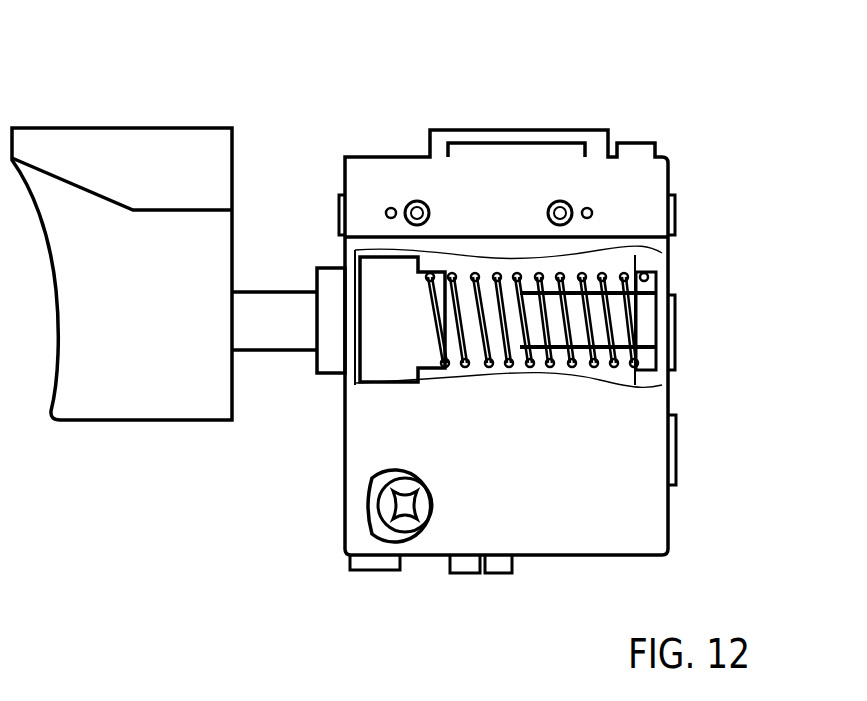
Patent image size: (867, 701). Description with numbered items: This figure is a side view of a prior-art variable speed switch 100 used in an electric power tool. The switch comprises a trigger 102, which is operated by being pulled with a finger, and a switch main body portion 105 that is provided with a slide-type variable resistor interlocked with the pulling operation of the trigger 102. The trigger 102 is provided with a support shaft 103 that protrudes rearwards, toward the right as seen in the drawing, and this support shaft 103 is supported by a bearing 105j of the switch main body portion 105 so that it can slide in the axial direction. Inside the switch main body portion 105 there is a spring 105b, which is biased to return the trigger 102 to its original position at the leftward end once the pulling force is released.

The variable speed switch 100 is at (562, 297).
The trigger 102 is at (140, 245).
The support shaft 103 is at (276, 330).
The switch main body portion 105 is at (637, 186).
The bearing 105j is at (330, 290).
The spring 105b is at (487, 365).